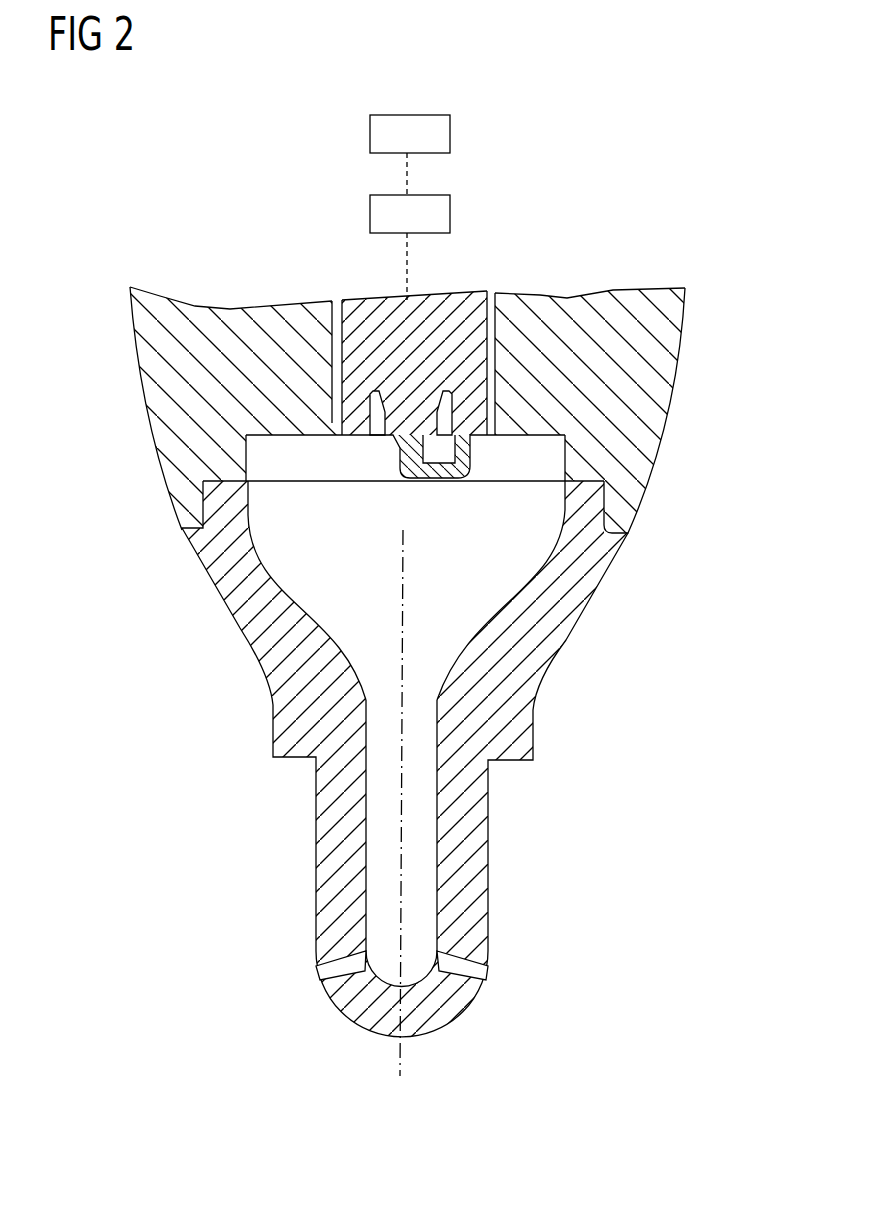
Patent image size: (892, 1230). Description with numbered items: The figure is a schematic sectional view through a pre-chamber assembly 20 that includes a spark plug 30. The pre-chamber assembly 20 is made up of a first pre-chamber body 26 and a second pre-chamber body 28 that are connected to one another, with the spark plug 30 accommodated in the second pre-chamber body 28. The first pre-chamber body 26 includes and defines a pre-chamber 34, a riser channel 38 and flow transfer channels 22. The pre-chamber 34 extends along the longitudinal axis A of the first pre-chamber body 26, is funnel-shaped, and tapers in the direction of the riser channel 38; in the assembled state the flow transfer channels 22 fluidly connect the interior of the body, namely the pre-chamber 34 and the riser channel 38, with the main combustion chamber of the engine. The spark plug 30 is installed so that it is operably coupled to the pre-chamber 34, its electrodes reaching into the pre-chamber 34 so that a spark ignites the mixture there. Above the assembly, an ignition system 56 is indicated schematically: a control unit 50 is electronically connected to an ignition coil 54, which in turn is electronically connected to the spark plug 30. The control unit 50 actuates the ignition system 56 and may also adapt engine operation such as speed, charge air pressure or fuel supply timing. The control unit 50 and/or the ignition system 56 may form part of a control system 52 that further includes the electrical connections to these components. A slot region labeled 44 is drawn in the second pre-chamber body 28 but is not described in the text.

The pre-chamber assembly 20 is at (575, 270).
The flow transfer channels 22 is at (318, 970).
The first pre-chamber body 26 is at (232, 679).
The second pre-chamber body 28 is at (120, 423).
The spark plug 30 is at (462, 300).
The pre-chamber 34 is at (440, 537).
The riser channel 38 is at (420, 848).
The slot 44 is at (348, 302).
The control unit 50 is at (370, 133).
The control system 52 is at (543, 95).
The ignition coil 54 is at (370, 212).
The ignition system 56 is at (214, 144).
The longitudinal axis A is at (402, 1052).